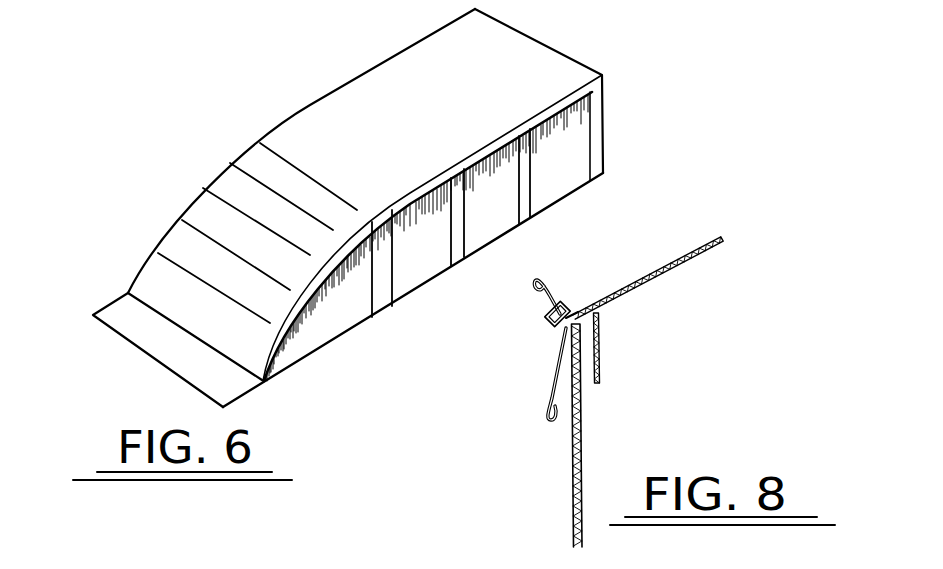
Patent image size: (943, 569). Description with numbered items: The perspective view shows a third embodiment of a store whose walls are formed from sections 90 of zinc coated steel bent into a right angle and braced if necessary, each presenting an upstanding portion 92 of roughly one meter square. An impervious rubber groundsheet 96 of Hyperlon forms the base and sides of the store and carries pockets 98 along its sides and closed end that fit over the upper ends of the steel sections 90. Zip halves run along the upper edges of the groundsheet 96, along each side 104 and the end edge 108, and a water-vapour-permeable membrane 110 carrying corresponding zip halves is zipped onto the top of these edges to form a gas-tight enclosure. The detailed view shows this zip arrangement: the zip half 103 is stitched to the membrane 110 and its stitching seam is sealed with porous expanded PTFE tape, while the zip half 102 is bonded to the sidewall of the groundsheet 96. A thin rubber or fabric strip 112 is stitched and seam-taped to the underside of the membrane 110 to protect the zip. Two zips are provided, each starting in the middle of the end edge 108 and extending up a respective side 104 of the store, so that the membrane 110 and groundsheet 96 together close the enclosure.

In FIG. 6, the section 90 is at (413, 263).
In FIG. 6, the upstanding portion 92 is at (552, 190).
In FIG. 8, the groundsheet 96 is at (570, 481).
In FIG. 6, the pocket 98 is at (472, 155).
In FIG. 8, the zip half 102 is at (560, 357).
In FIG. 8, the zip half 103 is at (583, 300).
In FIG. 6, the upper edge 104 is at (412, 197).
In FIG. 6, the end edge 108 is at (555, 50).
In FIG. 6, the membrane 110 is at (370, 143).
In FIG. 8, the membrane 110 is at (697, 263).
In FIG. 6, the strip 112 is at (183, 360).
In FIG. 8, the strip 112 is at (604, 339).